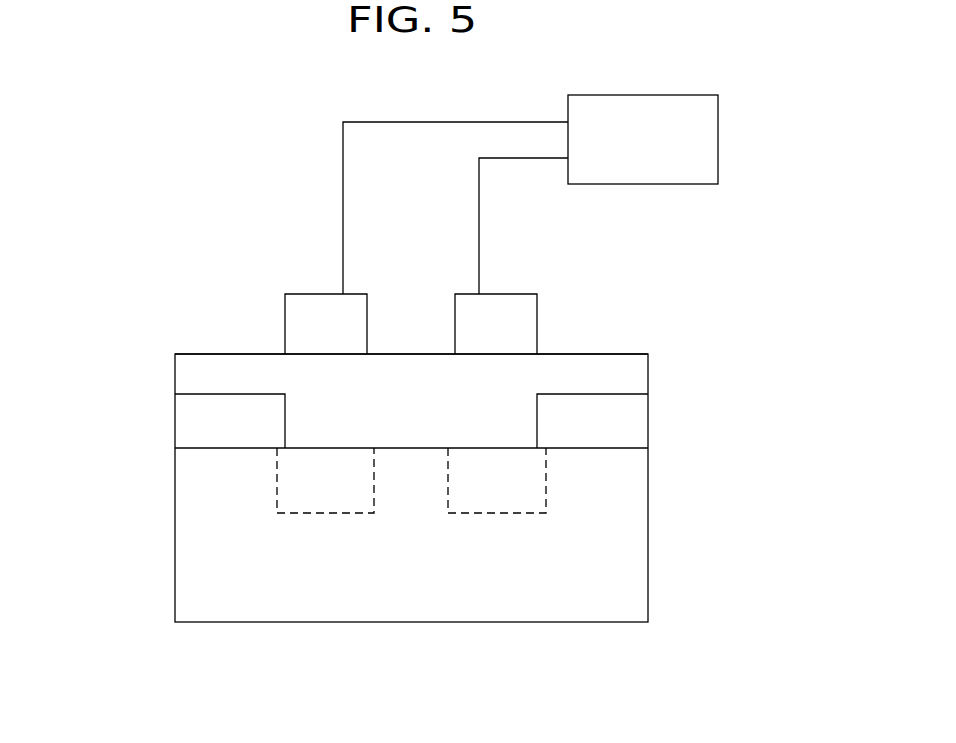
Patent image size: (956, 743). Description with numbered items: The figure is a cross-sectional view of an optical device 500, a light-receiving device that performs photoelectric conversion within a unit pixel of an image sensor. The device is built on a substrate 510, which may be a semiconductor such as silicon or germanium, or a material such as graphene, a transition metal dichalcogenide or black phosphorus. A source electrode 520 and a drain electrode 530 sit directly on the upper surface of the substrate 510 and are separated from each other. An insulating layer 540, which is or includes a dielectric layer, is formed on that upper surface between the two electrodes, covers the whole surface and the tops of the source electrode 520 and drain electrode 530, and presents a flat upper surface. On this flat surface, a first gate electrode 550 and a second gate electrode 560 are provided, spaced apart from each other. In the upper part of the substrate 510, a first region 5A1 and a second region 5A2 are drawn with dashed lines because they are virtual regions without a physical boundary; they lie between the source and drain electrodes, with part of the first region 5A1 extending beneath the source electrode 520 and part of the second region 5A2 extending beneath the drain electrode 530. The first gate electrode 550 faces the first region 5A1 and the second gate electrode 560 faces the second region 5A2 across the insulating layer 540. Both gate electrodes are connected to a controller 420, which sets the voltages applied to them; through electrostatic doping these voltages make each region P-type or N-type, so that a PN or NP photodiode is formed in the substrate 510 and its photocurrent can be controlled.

The optical device 500 is at (158, 318).
The substrate 510 is at (640, 570).
The source electrode 520 is at (182, 421).
The drain electrode 530 is at (640, 424).
The insulating layer 540 is at (640, 376).
The first gate electrode 550 is at (292, 318).
The second gate electrode 560 is at (530, 320).
The first region 5A1 is at (275, 478).
The second region 5A2 is at (548, 478).
The controller 420 is at (709, 142).